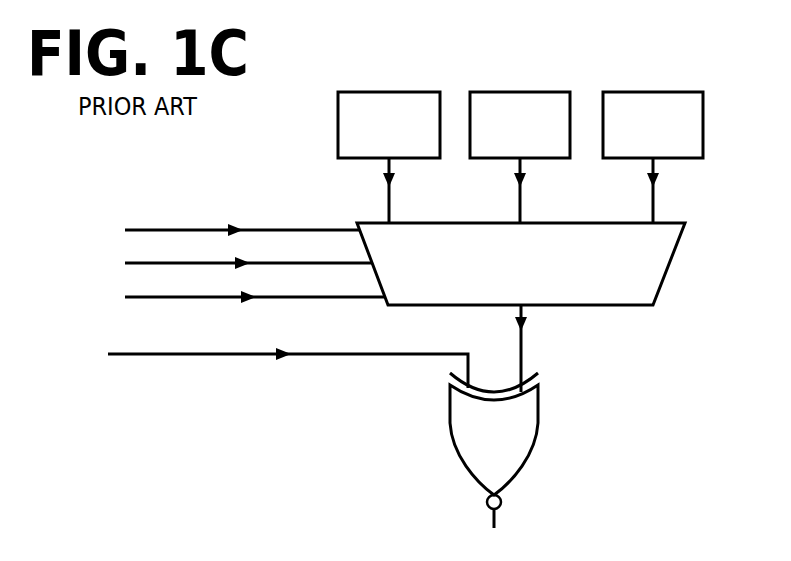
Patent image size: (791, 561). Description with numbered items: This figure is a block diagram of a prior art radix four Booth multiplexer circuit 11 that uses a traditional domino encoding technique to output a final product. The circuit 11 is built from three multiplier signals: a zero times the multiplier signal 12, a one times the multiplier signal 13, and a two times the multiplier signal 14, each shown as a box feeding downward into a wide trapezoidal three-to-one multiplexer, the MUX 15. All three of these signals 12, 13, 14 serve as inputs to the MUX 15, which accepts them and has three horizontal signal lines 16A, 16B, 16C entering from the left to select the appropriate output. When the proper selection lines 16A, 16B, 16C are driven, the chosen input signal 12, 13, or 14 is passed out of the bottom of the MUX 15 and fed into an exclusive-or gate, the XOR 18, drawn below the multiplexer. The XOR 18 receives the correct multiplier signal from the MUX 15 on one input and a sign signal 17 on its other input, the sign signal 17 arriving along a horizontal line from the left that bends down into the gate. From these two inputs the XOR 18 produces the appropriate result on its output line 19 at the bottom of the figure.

The circuit 11 is at (283, 138).
The 0 times the multiplier signal 12 is at (388, 90).
The 1 times the multiplier signal 13 is at (520, 90).
The 2 times the multiplier signal 14 is at (652, 90).
The 3:1 MUX 15 is at (670, 268).
The signal line 16A is at (242, 229).
The signal line 16B is at (250, 262).
The signal line 16C is at (258, 296).
The sign signal 17 is at (185, 353).
The exclusive or "XOR" 18 is at (538, 432).
The line 19 is at (500, 538).